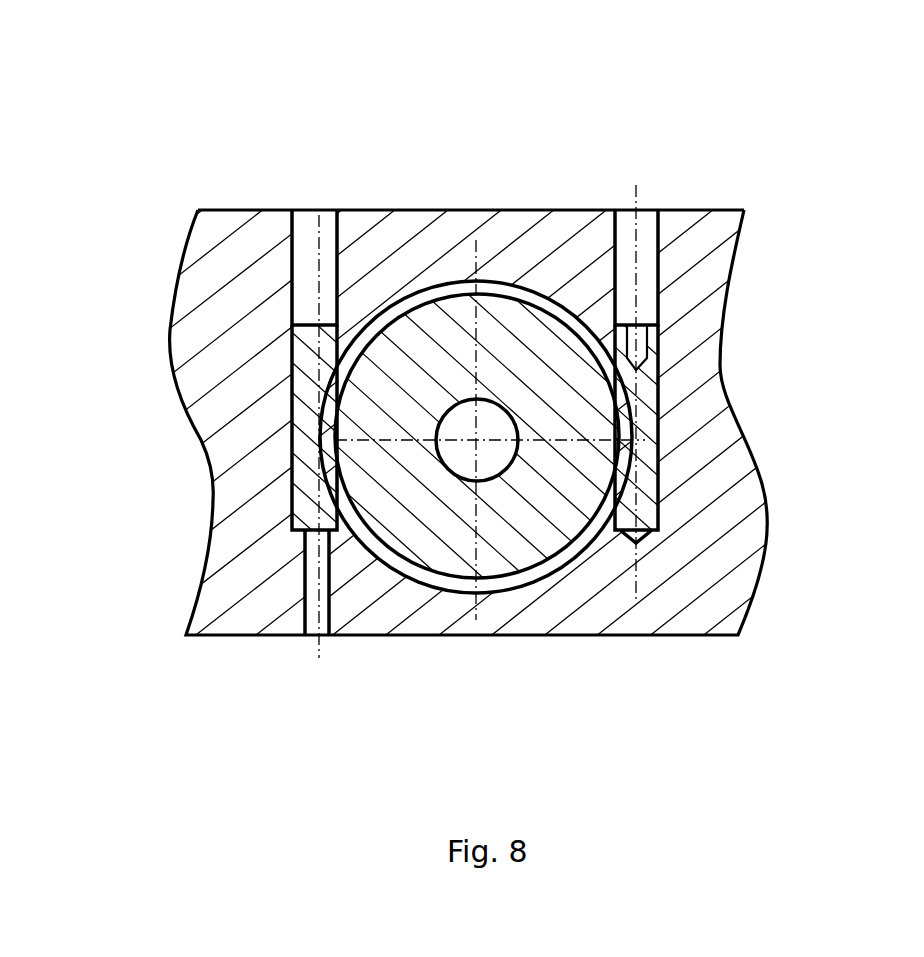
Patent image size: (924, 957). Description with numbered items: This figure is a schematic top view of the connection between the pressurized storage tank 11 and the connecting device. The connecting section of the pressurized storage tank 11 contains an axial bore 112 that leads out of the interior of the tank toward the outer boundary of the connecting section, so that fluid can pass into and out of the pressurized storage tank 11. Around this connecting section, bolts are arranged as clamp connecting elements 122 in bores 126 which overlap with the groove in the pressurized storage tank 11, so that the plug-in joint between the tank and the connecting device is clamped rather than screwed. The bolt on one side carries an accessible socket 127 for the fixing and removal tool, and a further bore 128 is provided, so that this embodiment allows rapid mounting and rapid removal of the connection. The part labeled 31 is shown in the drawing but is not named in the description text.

The pressurized storage tank 11 is at (525, 532).
The upper housing portion 31 is at (388, 241).
The axial bore 112 is at (483, 451).
The clamp connecting elements 122 is at (303, 402).
The bores 126 is at (314, 256).
The socket 127 is at (638, 343).
The bore 128 is at (313, 588).